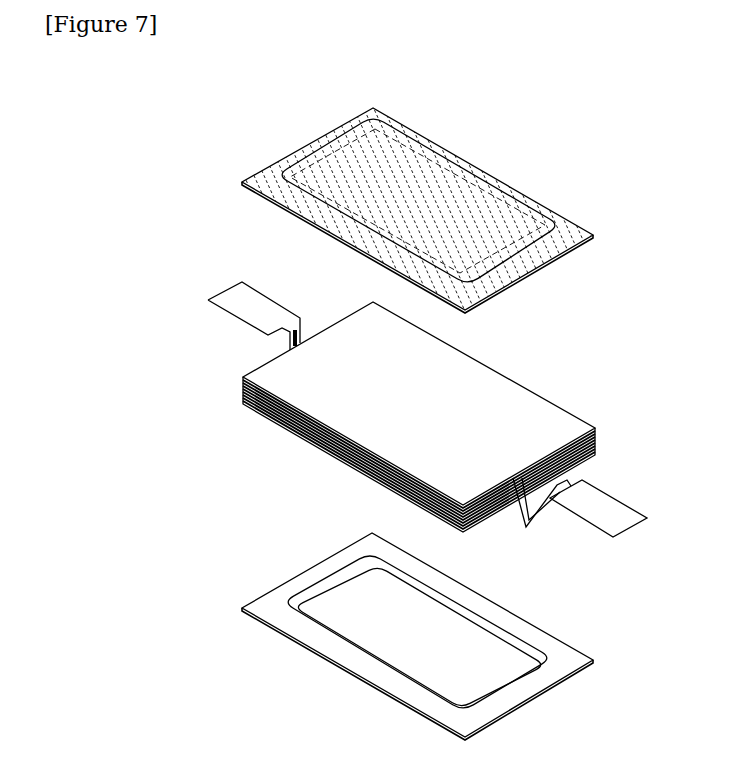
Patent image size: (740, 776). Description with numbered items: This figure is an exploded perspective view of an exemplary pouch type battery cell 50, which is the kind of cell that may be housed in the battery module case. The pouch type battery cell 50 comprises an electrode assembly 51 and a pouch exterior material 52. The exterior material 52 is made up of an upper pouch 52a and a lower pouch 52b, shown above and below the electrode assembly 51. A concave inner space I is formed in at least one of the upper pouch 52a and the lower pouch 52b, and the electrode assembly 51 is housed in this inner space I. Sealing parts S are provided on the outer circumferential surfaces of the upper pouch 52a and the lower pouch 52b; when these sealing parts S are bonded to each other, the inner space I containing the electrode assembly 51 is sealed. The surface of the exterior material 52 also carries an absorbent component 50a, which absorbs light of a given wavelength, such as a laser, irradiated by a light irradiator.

The pouch type battery cell 50 is at (128, 83).
The absorbent component 50a is at (463, 190).
The electrode assembly 51 is at (512, 405).
The pouch exterior material 52 is at (110, 274).
The upper pouch 52a is at (245, 186).
The lower pouch 52b is at (265, 605).
The sealing part S is at (282, 619).
The inner space I is at (372, 640).